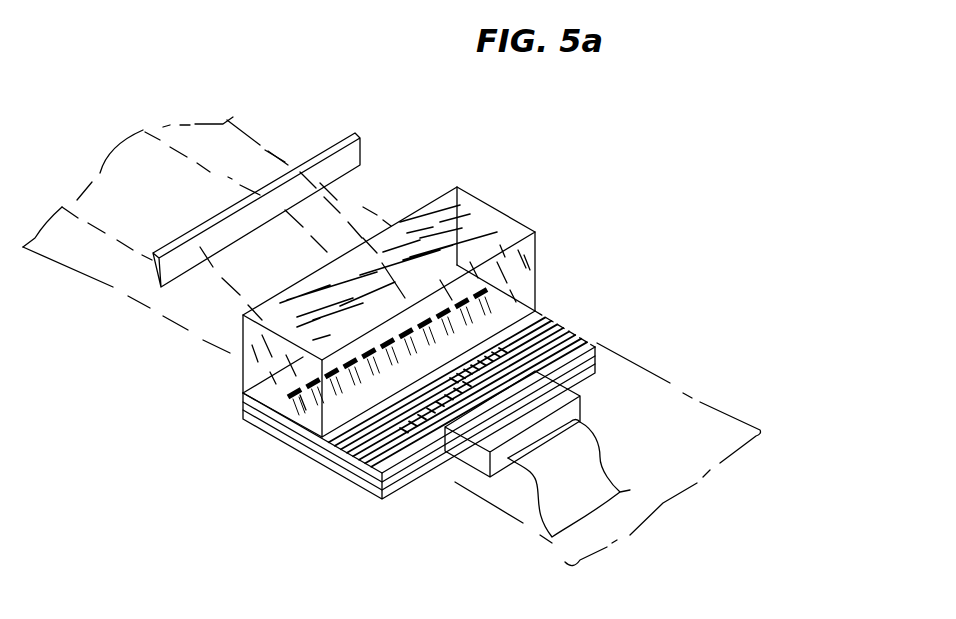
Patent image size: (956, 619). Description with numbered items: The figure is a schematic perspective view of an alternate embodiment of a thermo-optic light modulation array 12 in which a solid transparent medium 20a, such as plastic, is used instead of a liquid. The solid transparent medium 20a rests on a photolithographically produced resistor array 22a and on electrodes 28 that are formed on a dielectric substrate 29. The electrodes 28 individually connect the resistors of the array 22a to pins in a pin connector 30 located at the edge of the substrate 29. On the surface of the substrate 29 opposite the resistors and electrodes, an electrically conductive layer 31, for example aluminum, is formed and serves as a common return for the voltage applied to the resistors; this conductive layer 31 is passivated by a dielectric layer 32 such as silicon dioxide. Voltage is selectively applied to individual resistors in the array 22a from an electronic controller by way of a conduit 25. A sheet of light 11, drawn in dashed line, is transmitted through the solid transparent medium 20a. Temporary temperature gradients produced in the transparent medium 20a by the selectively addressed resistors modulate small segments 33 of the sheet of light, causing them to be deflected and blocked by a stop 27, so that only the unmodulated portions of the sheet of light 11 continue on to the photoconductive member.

The sheet of light 11 is at (628, 357).
The thermo-optic light modulation array 12 is at (392, 200).
The solid transparent medium 20a is at (490, 216).
The resistor array 22a is at (290, 412).
The conduit 25 is at (587, 462).
The stop 27 is at (335, 148).
The electrodes 28 is at (548, 333).
The dielectric substrate 29 is at (242, 392).
The pin connector 30 is at (533, 405).
The electrically conductive layer 31 is at (242, 410).
The dielectric layer 32 is at (376, 494).
The small segments of the sheet of light 33 is at (238, 283).